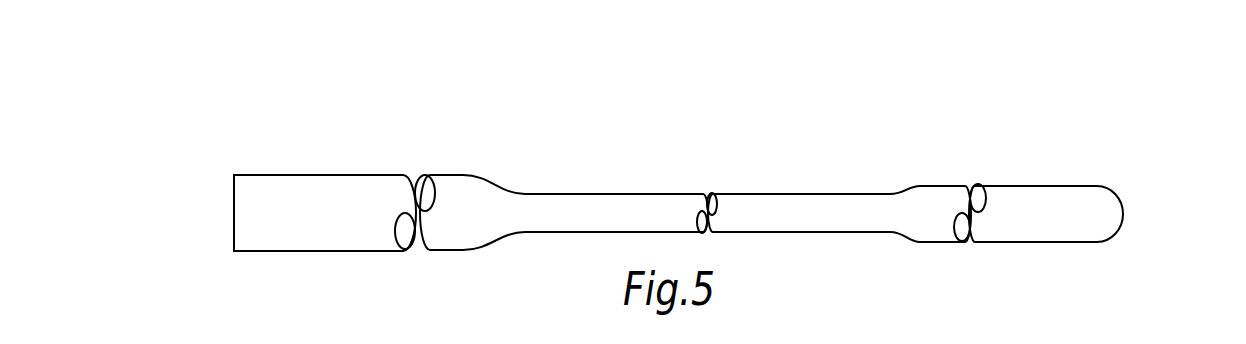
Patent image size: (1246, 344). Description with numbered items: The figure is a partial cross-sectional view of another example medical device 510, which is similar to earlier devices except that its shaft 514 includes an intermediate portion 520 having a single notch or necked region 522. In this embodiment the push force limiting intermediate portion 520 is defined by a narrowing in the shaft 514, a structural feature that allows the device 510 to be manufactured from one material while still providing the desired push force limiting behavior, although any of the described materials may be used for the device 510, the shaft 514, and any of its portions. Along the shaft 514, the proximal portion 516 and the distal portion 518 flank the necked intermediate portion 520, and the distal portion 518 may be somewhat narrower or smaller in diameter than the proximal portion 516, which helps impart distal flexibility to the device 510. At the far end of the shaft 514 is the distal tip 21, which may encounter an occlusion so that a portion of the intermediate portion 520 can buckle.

The device 510 is at (431, 110).
The shaft 514 is at (452, 158).
The proximal portion 516 is at (277, 205).
The distal portion 518 is at (1007, 202).
The intermediate portion 520 is at (678, 207).
The notch or necked region 522 is at (753, 174).
The distal tip 21 is at (1123, 213).